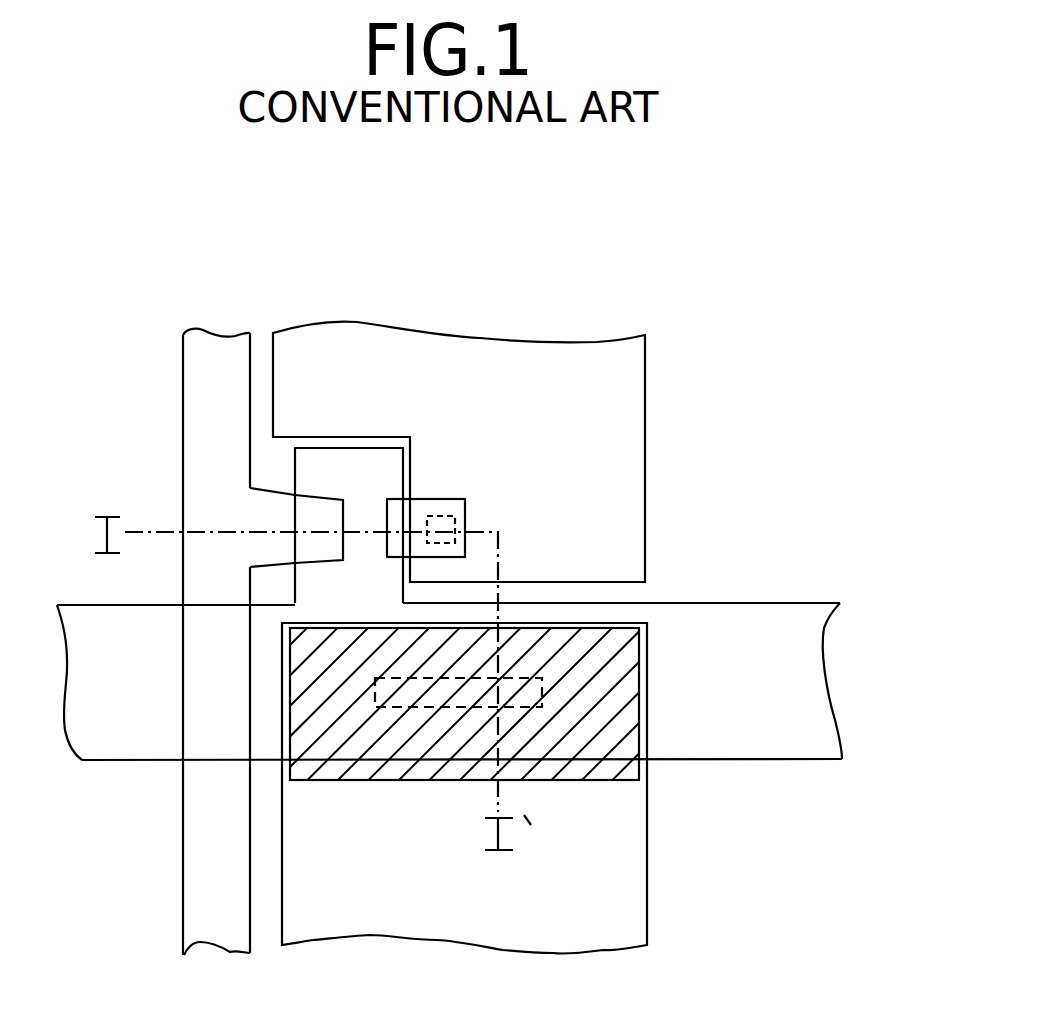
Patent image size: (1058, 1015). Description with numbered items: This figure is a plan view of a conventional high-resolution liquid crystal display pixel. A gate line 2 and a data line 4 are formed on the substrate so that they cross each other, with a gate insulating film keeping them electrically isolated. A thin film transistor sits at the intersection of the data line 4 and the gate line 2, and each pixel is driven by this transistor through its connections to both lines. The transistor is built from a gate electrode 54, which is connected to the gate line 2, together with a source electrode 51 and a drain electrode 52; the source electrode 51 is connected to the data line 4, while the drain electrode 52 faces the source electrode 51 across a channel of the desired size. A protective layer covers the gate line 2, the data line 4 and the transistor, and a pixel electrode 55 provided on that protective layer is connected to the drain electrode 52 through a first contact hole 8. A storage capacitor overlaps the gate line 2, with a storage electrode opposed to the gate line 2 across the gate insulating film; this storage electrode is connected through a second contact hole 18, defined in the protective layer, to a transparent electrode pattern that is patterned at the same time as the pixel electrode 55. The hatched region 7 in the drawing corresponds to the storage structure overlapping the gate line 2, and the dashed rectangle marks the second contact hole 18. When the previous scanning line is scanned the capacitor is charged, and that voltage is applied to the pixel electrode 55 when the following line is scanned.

The gate line 2 is at (798, 660).
The data line 4 is at (212, 352).
The semiconductor layer 7 is at (362, 748).
The first contact hole 8 is at (458, 523).
The second contact hole 18 is at (463, 706).
The source electrode 51 is at (276, 500).
The drain electrode 52 is at (465, 500).
The gate electrode 54 is at (405, 437).
The pixel electrode 55 is at (622, 897).